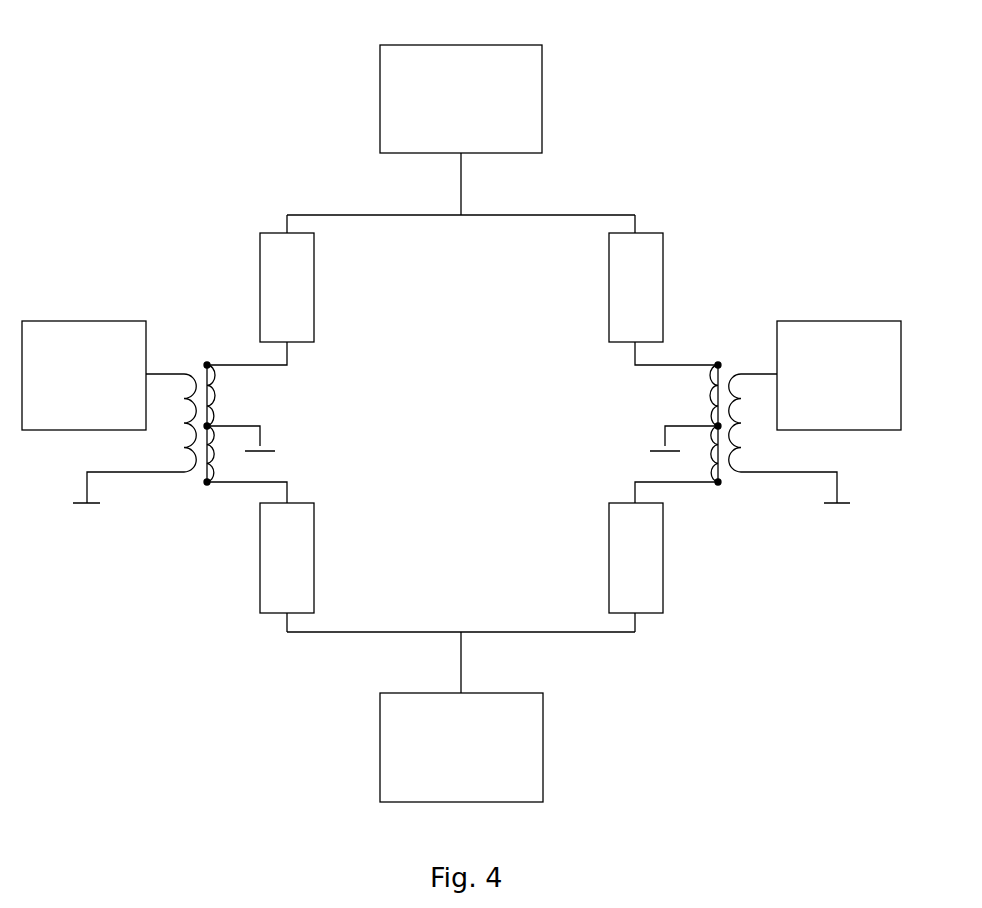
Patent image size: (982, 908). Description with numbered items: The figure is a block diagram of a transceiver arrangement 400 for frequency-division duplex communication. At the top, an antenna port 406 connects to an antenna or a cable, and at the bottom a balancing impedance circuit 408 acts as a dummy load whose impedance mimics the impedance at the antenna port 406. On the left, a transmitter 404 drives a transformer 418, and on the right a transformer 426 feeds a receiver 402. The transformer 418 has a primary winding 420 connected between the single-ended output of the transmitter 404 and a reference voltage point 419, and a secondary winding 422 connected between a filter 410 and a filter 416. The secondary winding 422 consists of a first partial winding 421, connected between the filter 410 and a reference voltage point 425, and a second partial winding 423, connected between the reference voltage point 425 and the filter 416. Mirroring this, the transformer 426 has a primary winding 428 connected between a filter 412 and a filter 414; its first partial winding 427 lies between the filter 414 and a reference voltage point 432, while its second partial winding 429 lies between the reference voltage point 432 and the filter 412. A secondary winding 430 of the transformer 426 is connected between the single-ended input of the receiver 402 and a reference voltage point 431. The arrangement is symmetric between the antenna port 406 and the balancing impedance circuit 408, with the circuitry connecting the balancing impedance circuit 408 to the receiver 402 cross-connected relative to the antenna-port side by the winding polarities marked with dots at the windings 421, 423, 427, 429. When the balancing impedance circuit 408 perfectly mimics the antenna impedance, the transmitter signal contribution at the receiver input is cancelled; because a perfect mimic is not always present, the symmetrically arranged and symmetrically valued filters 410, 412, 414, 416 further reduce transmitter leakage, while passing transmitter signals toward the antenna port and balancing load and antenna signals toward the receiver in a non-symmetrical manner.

The transceiver arrangement 400 is at (480, 429).
The receiver 402 is at (830, 330).
The transmitter 404 is at (93, 330).
The antenna port 406 is at (397, 68).
The balancing impedance circuit 408 is at (452, 795).
The filter 410 is at (275, 262).
The filter 412 is at (648, 585).
The filter 414 is at (650, 262).
The filter 416 is at (275, 585).
The transformer 418 is at (203, 378).
The reference voltage point 419 is at (100, 505).
The primary winding 420 is at (193, 457).
The first partial winding 421 is at (209, 366).
The secondary winding 422 is at (206, 452).
The second partial winding 423 is at (208, 483).
The reference voltage point 425 is at (263, 441).
The transformer 426 is at (720, 378).
The first partial winding 427 is at (717, 366).
The primary winding 428 is at (719, 452).
The second partial winding 429 is at (717, 484).
The secondary winding 430 is at (733, 460).
The reference voltage point 431 is at (822, 505).
The reference voltage point 432 is at (660, 445).